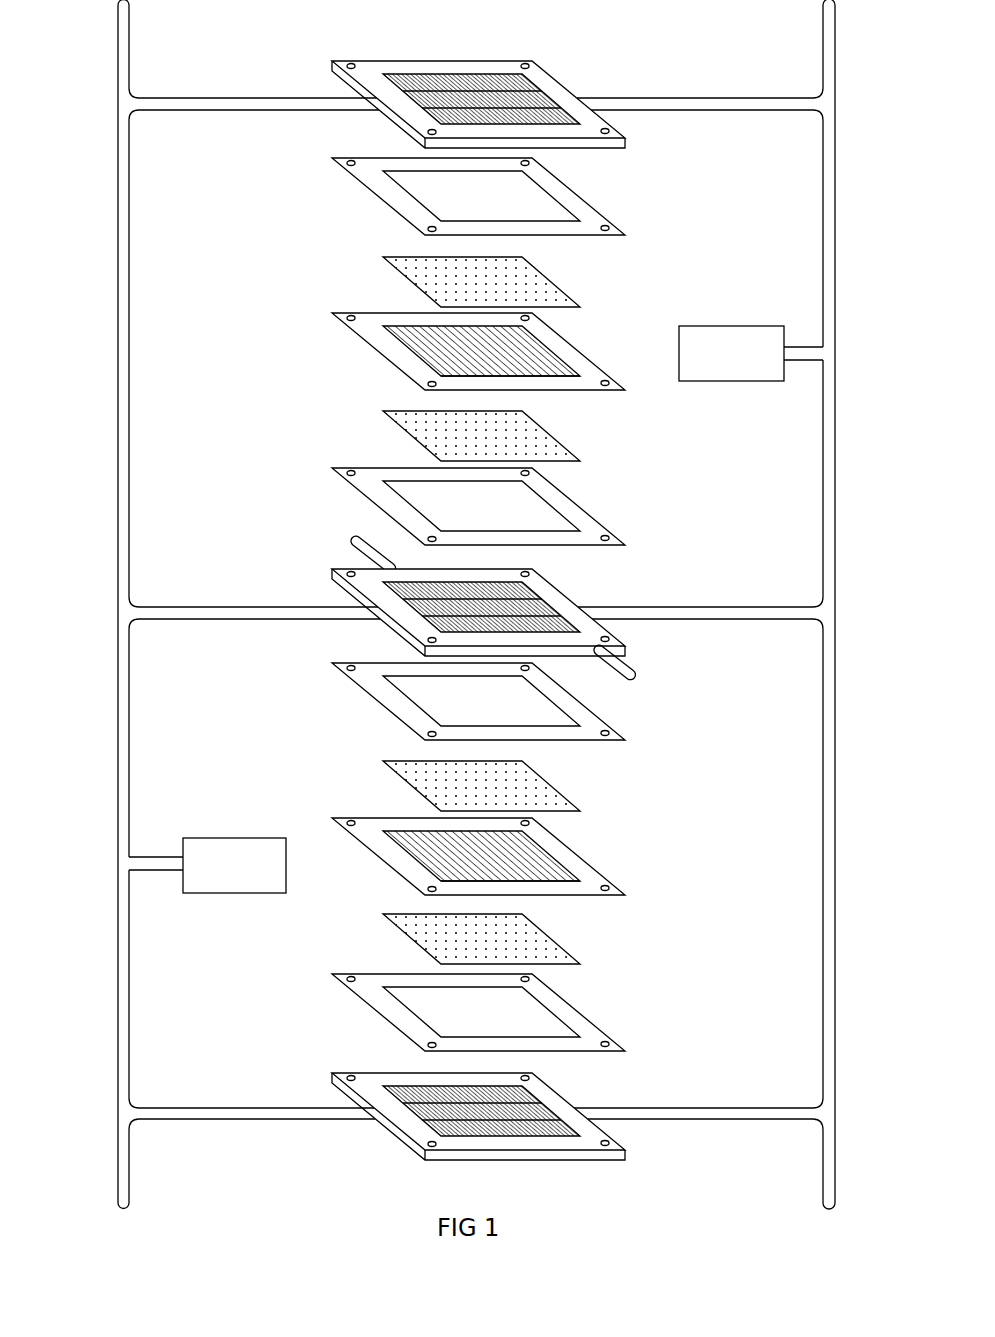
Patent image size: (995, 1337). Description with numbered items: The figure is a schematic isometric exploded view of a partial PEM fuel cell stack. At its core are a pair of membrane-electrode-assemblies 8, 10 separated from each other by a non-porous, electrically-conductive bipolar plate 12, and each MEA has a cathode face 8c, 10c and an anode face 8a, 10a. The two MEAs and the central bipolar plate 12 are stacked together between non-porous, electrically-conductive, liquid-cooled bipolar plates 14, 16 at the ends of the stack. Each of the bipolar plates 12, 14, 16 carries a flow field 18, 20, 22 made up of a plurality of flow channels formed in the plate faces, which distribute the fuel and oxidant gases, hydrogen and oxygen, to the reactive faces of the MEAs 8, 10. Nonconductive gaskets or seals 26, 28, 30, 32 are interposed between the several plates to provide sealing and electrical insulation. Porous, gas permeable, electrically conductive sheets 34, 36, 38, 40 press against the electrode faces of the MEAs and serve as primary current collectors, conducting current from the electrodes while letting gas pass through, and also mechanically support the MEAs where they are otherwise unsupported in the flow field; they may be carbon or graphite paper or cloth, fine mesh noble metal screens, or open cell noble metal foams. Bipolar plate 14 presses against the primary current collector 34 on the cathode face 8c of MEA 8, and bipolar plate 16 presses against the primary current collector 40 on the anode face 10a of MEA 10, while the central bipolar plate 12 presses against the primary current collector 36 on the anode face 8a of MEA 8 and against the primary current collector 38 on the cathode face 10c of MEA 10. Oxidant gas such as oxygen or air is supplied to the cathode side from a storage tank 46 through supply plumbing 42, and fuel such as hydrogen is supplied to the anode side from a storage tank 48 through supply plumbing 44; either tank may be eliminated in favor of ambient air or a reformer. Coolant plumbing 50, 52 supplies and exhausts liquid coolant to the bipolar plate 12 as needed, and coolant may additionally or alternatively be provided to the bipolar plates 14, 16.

The membrane-electrode-assembly 8 is at (444, 366).
The anode face 8a is at (557, 378).
The cathode face 8c is at (542, 350).
The membrane-electrode-assembly 10 is at (521, 829).
The anode face 10a is at (430, 867).
The cathode face 10c is at (405, 832).
The bipolar plate 12 is at (409, 610).
The bipolar plate 14 is at (405, 82).
The bipolar plate 16 is at (511, 1129).
The flow field 18 is at (533, 592).
The flow field 20 is at (535, 100).
The flow field 22 is at (430, 1117).
The gasket 26 is at (400, 205).
The gasket 28 is at (375, 487).
The gasket 30 is at (592, 722).
The gasket 32 is at (575, 1012).
The primary current collector 34 is at (407, 267).
The primary current collector 36 is at (415, 428).
The primary current collector 38 is at (545, 790).
The primary current collector 40 is at (545, 945).
The supply plumbing 42 is at (838, 488).
The supply plumbing 44 is at (118, 985).
The storage tank 46 is at (705, 328).
The storage tank 48 is at (268, 838).
The coolant plumbing 50 is at (352, 540).
The coolant plumbing 52 is at (632, 672).